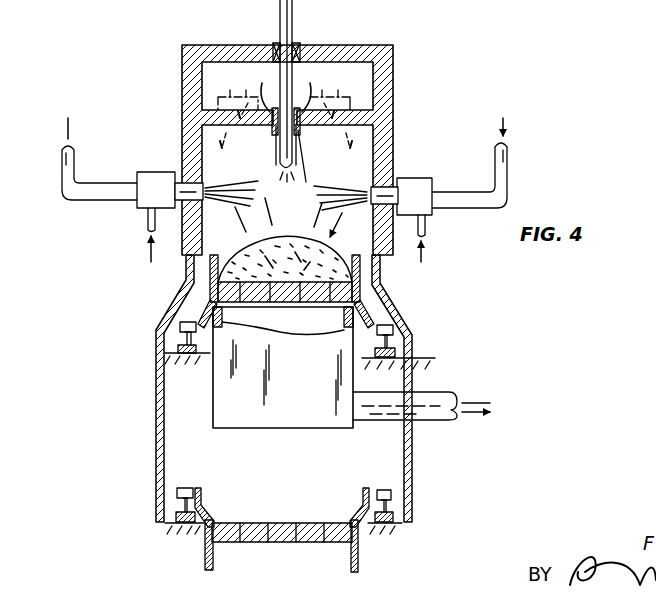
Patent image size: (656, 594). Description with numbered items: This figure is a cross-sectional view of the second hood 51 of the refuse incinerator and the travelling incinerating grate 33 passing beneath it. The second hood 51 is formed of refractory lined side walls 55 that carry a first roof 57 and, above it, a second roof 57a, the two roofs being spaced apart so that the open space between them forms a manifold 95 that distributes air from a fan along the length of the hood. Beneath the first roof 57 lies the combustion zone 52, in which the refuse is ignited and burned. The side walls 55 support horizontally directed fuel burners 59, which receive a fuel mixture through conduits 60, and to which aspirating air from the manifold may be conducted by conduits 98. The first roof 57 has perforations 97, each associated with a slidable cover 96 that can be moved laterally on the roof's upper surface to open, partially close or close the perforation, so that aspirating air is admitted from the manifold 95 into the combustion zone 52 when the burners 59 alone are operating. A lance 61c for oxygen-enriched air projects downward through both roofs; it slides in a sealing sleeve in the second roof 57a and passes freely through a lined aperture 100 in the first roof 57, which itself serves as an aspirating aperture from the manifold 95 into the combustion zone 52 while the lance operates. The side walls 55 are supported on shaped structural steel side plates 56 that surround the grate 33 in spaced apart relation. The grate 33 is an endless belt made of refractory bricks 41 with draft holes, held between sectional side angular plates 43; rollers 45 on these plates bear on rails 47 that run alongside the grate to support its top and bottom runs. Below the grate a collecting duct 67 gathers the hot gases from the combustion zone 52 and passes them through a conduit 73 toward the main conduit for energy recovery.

The lance 61c is at (291, 32).
The second roof 57a is at (380, 40).
The second hood 51 is at (180, 105).
The slidable cover 96 is at (268, 96).
The manifold 95 is at (372, 93).
The side walls 55 is at (186, 125).
The first roof 57 is at (286, 126).
The perforations 97 is at (311, 156).
The combustion zone 52 is at (360, 162).
The conduits 98 is at (76, 153).
The fuel burners 59 is at (426, 190).
The conduits 60 is at (148, 221).
The lined apertures 100 is at (292, 168).
The refractory bricks 41 is at (215, 292).
The travelling incinerating grate 33 is at (380, 283).
The rollers 45 is at (388, 328).
The rails 47 is at (182, 341).
The conduit 73 is at (440, 402).
The collecting duct 67 is at (216, 400).
The side plates 56 is at (157, 414).
The side angular plates 43 is at (206, 553).